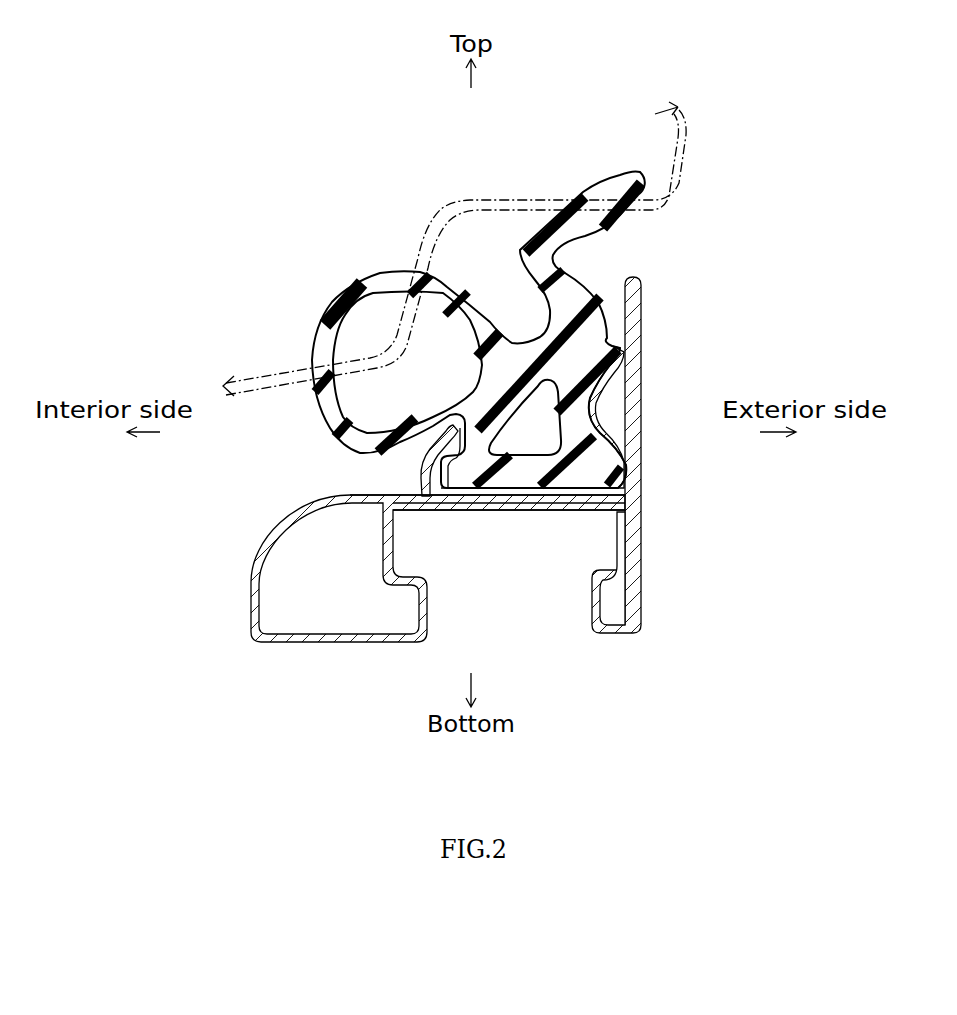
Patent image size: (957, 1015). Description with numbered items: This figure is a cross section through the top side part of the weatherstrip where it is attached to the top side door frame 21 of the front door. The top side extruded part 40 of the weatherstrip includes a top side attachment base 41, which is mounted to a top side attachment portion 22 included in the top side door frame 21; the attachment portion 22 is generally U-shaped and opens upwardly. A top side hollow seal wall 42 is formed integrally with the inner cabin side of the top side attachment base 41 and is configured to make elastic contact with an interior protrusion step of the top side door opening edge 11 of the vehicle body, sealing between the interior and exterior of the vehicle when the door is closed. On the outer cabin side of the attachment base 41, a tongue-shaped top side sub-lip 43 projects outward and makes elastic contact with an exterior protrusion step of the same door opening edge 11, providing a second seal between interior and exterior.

The top side door opening edge 11 is at (507, 197).
The top side door frame 21 is at (642, 465).
The top side attachment portion 22 is at (513, 492).
The top side extruded part 40 is at (303, 458).
The top side attachment base 41 is at (420, 505).
The top side hollow seal wall 42 is at (360, 278).
The top side sub-lip 43 is at (638, 220).